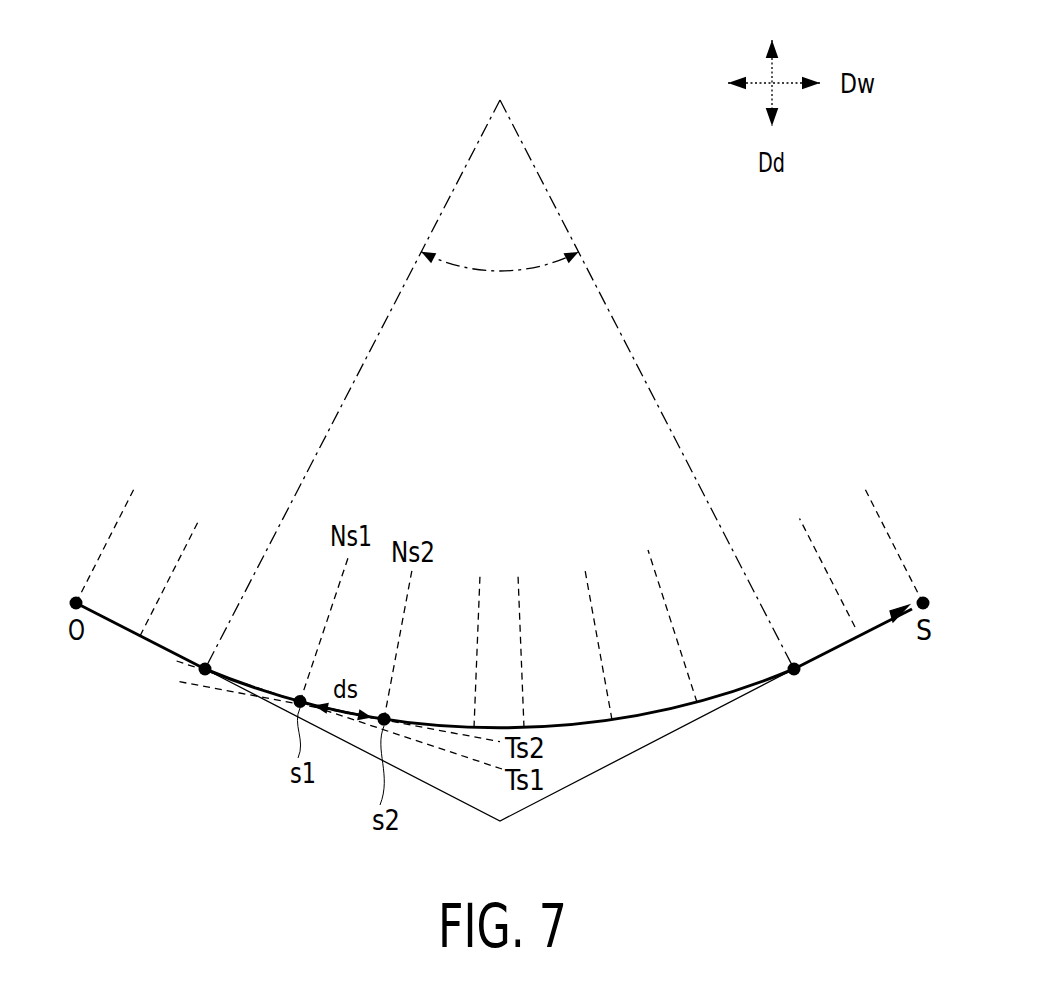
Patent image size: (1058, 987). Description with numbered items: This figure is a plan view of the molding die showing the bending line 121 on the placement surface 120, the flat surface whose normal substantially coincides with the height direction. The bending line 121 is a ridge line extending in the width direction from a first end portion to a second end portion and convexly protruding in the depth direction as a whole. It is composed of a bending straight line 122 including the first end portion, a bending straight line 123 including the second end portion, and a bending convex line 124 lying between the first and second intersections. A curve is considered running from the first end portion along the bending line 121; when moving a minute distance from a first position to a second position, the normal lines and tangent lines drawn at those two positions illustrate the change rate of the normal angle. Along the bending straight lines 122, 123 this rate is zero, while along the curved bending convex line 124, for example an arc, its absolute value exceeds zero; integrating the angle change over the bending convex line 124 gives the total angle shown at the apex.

The placement surface 120 is at (623, 475).
The bending line 121 is at (494, 734).
The bending straight line 122 is at (163, 650).
The bending straight line 123 is at (838, 650).
The bending convex line 124 is at (660, 715).